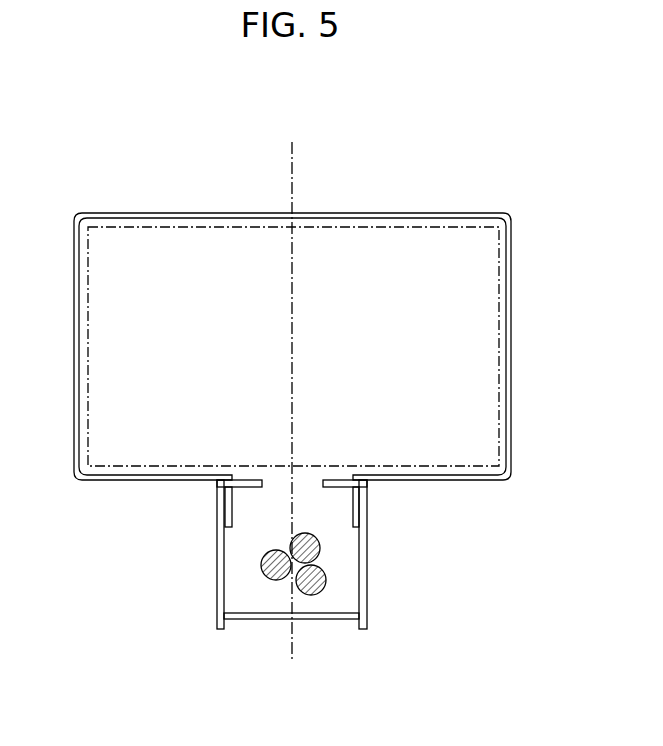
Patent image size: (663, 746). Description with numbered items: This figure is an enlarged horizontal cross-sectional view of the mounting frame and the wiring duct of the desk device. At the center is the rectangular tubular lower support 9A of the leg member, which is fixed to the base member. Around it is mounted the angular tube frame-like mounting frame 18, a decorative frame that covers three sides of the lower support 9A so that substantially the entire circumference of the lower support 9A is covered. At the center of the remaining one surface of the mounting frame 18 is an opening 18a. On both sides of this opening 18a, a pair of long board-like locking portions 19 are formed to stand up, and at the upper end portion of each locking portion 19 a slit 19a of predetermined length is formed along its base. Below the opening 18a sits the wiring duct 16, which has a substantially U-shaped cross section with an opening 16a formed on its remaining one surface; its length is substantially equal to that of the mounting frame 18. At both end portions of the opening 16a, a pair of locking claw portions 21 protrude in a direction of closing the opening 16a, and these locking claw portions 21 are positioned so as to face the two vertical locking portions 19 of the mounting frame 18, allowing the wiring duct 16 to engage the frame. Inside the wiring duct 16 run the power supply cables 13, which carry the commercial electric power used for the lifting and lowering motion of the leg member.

The mounting frame 18 is at (385, 214).
The lower support 9A is at (150, 228).
The opening 18a is at (280, 483).
The opening 16a is at (307, 485).
The locking claw portion 21 is at (247, 480).
The locking portion 19 is at (220, 517).
The slit 19a is at (220, 490).
The wiring duct 16 is at (367, 590).
The power supply cable 13 is at (268, 582).